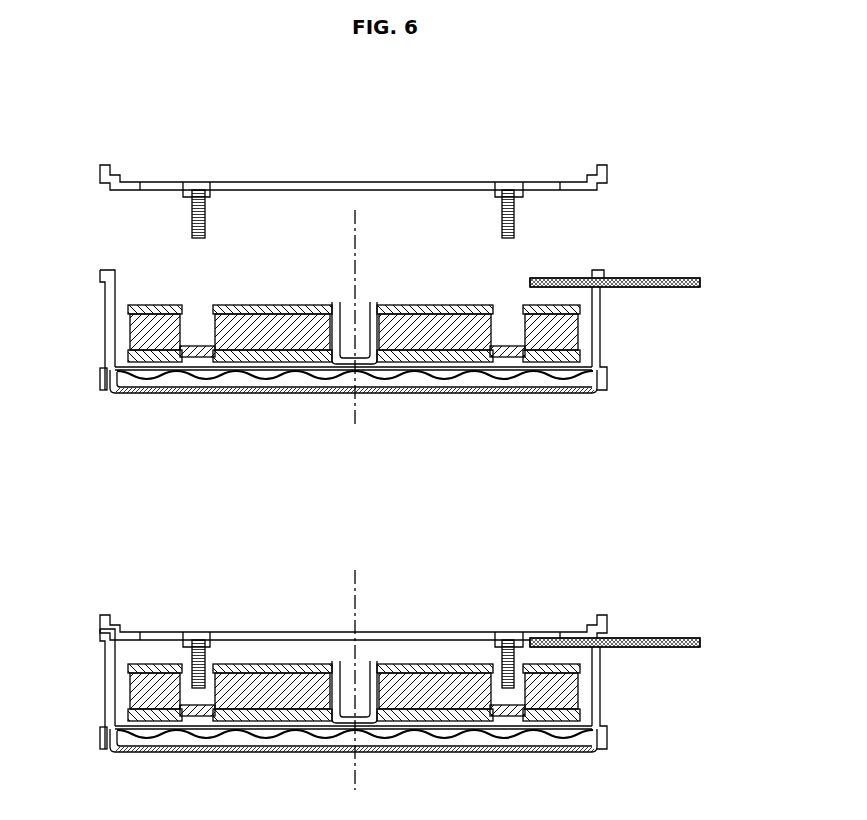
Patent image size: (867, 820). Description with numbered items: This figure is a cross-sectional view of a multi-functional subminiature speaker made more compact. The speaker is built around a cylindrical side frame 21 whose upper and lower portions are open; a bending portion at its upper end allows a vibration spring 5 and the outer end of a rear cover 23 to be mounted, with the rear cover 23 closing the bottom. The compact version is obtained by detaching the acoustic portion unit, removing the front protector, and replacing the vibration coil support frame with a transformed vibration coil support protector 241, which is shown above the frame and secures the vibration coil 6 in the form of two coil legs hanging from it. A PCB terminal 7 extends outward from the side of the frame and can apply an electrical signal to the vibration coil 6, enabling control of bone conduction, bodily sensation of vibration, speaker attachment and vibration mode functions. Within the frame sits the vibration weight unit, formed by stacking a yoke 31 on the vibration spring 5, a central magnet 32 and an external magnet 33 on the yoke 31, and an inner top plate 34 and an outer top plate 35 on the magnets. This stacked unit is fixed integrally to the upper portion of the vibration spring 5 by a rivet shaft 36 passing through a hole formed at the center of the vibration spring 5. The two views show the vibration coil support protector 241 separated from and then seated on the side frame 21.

The vibration coil support protector 241 is at (415, 182).
The vibration coil 6 is at (516, 207).
The PCB terminal 7 is at (648, 278).
The inner top plate 34 is at (252, 305).
The outer top plate 35 is at (130, 306).
The external magnet 33 is at (568, 327).
The rivet shaft 36 is at (339, 366).
The yoke 31 is at (520, 372).
The central magnet 32 is at (432, 345).
The vibration spring 5 is at (242, 375).
The rear cover 23 is at (361, 394).
The side frame 21 is at (100, 380).